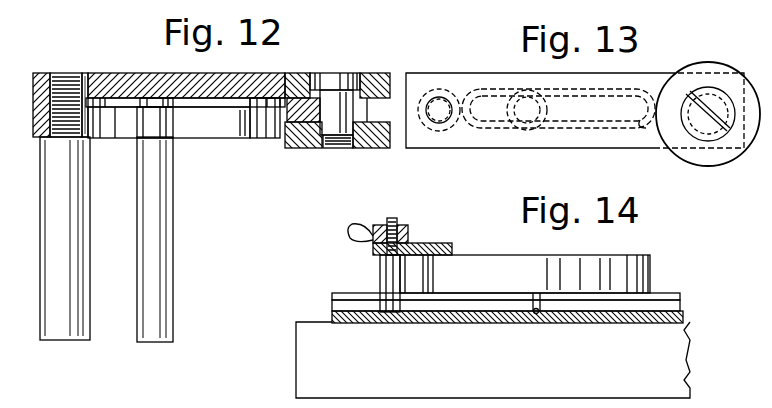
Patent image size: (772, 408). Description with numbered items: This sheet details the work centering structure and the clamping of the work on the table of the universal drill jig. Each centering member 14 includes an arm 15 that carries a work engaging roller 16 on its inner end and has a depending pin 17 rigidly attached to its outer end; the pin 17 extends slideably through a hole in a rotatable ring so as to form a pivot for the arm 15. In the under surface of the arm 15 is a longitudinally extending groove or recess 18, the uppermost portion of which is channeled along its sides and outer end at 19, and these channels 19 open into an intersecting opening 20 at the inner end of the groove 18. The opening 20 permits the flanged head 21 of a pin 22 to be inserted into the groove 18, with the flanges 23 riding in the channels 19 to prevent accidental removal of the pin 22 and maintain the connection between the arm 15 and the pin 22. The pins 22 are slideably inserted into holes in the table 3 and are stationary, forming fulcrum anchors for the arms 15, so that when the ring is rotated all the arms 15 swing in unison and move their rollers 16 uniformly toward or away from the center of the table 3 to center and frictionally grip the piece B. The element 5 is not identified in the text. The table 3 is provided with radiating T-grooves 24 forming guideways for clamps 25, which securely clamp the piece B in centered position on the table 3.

In FIG. 14, the work table 3 is at (686, 322).
In FIG. 13, the arm 5 is at (637, 80).
In FIG. 12, the centering members 14 is at (260, 72).
In FIG. 12, the arms 15 is at (120, 73).
In FIG. 12, the work engaging rollers 16 is at (385, 73).
In FIG. 13, the work engaging rollers 16 is at (710, 165).
In FIG. 12, the depending pins 17 is at (72, 285).
In FIG. 13, the depending pins 17 is at (441, 112).
In FIG. 12, the grooves or recesses 18 is at (207, 130).
In FIG. 13, the grooves or recesses 18 is at (590, 122).
In FIG. 12, the channels 19 is at (207, 100).
In FIG. 13, the channels 19 is at (582, 97).
In FIG. 12, the intersecting opening 20 is at (265, 130).
In FIG. 13, the intersecting opening 20 is at (646, 128).
In FIG. 12, the flanged heads 21 is at (150, 118).
In FIG. 12, the pins 22 is at (162, 258).
In FIG. 12, the flanges 23 is at (152, 100).
In FIG. 14, the T-grooves 24 is at (592, 313).
In FIG. 14, the clamps 25 is at (413, 243).
In FIG. 14, the piece B is at (650, 278).